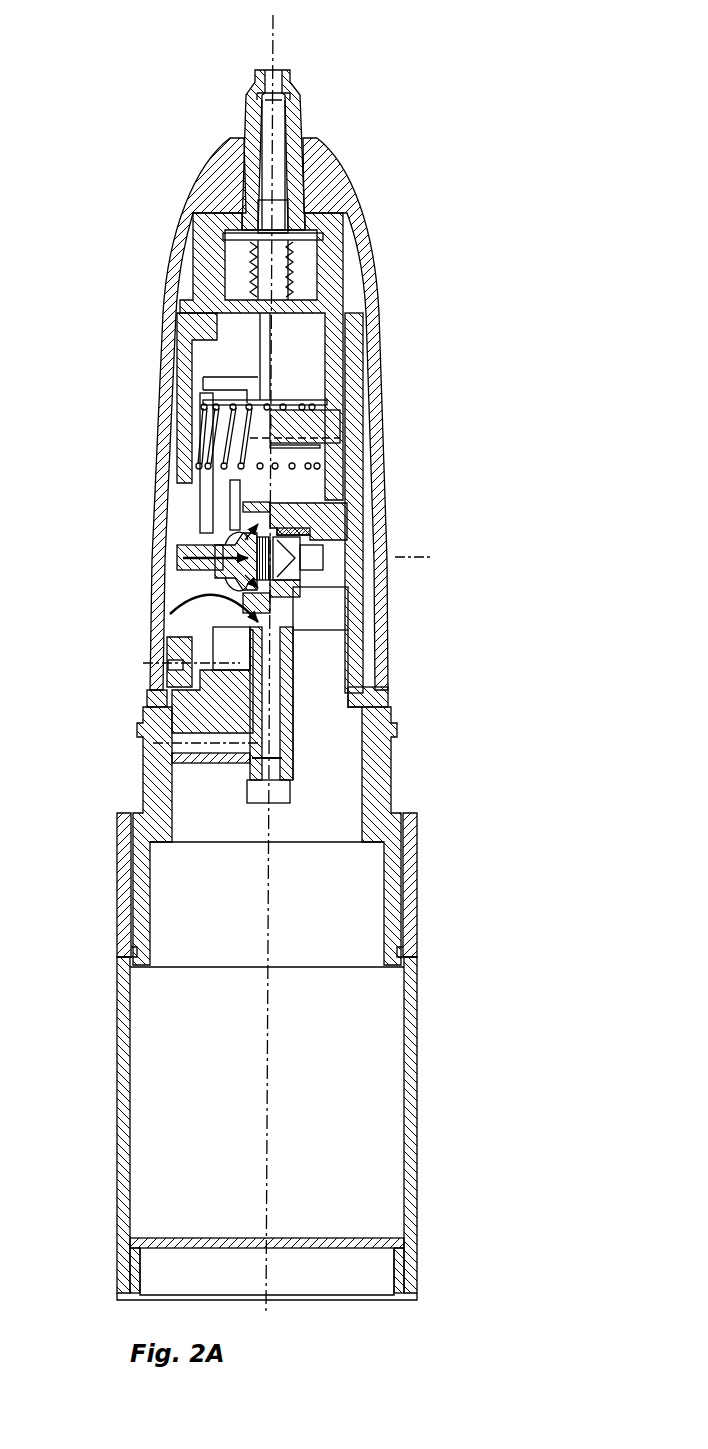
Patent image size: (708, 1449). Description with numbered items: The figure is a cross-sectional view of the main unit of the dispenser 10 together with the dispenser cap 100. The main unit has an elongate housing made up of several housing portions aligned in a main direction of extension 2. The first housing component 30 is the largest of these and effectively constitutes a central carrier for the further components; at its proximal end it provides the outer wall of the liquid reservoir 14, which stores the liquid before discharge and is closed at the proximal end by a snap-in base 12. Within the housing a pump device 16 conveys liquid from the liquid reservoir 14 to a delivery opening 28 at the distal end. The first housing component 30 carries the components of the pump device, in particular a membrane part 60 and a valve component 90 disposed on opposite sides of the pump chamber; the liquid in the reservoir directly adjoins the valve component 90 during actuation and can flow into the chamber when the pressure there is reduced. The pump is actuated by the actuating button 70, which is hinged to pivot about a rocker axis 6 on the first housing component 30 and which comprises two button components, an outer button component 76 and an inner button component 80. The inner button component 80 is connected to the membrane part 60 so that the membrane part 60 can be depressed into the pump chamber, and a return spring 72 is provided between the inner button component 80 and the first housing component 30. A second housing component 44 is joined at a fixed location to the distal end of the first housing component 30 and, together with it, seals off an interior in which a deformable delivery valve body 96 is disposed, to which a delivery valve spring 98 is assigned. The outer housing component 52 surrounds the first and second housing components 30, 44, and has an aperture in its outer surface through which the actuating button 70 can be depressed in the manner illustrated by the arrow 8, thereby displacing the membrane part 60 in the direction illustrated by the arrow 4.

The main direction of extension 2 is at (272, 22).
The arrow 4 is at (197, 548).
The rocker axis 6 is at (215, 675).
The arrow 8 is at (258, 603).
The dispenser 10 is at (158, 222).
The snap-in base 12 is at (265, 578).
The liquid reservoir 14 is at (313, 1057).
The pump device 16 is at (297, 603).
The delivery opening 28 is at (277, 72).
The first housing component 30 is at (366, 640).
The second housing component 44 is at (350, 238).
The outer housing component 52 is at (193, 197).
The membrane part 60 is at (197, 553).
The actuating button 70 is at (143, 527).
The return spring 72 is at (300, 410).
The button component 76 is at (168, 412).
The inner button component 80 is at (172, 475).
The valve component 90 is at (322, 557).
The deformable delivery valve body 96 is at (292, 180).
The delivery valve spring 98 is at (250, 278).
The dispenser cap 100 is at (0, 322).